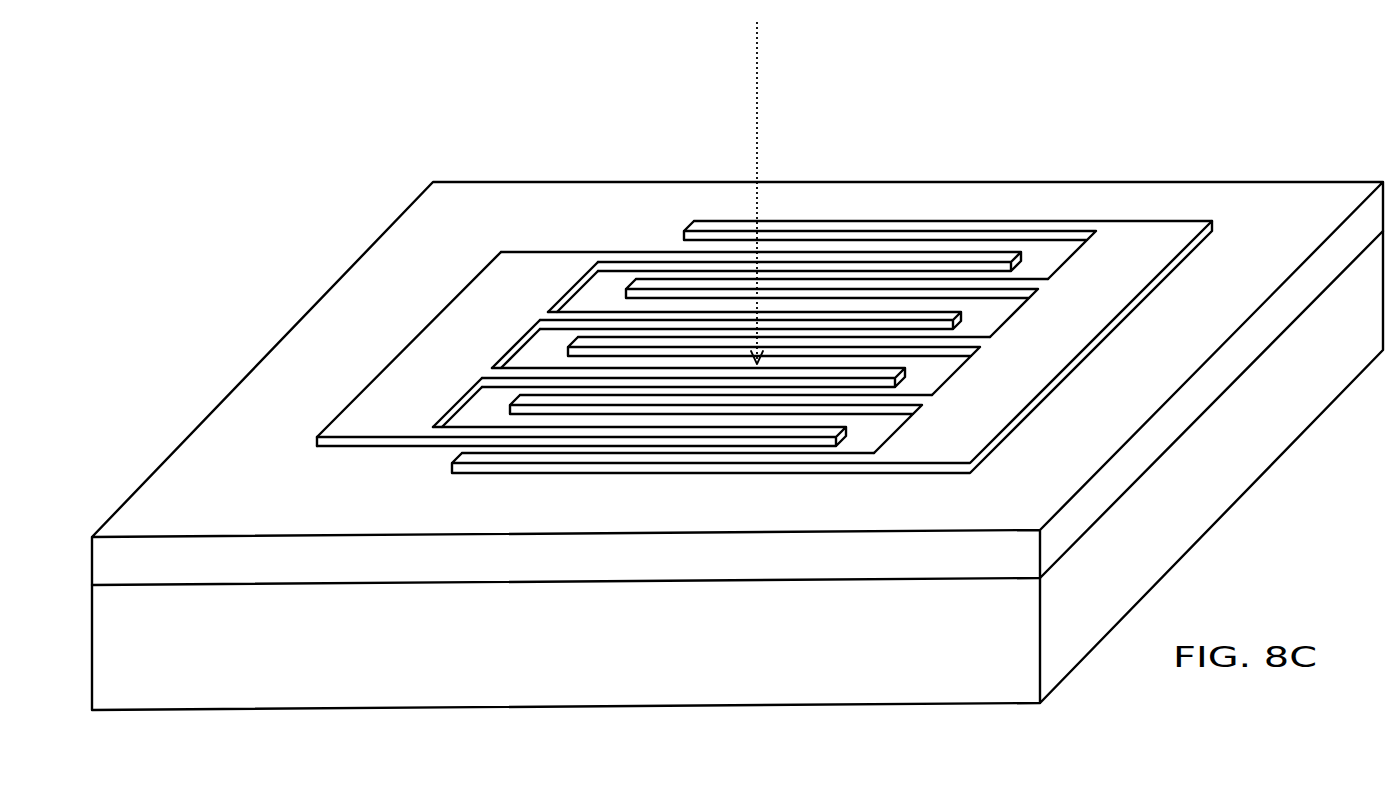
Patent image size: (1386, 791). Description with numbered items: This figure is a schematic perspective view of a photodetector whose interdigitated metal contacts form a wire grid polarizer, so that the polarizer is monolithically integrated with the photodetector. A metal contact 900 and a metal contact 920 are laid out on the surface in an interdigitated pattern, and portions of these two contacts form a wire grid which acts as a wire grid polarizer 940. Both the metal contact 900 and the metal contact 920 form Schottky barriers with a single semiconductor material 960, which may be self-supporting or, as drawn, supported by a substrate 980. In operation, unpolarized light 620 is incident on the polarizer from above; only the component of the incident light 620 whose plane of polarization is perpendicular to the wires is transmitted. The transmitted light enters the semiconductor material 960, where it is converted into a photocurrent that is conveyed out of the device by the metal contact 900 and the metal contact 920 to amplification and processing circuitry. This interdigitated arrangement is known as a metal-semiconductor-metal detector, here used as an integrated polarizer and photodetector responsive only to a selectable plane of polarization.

The metal contact 900 is at (422, 380).
The metal contact 920 is at (1147, 260).
The wire grid polarizer 940 is at (667, 358).
The semiconductor material 960 is at (150, 570).
The substrate 980 is at (737, 470).
The incident light 620 is at (786, 193).